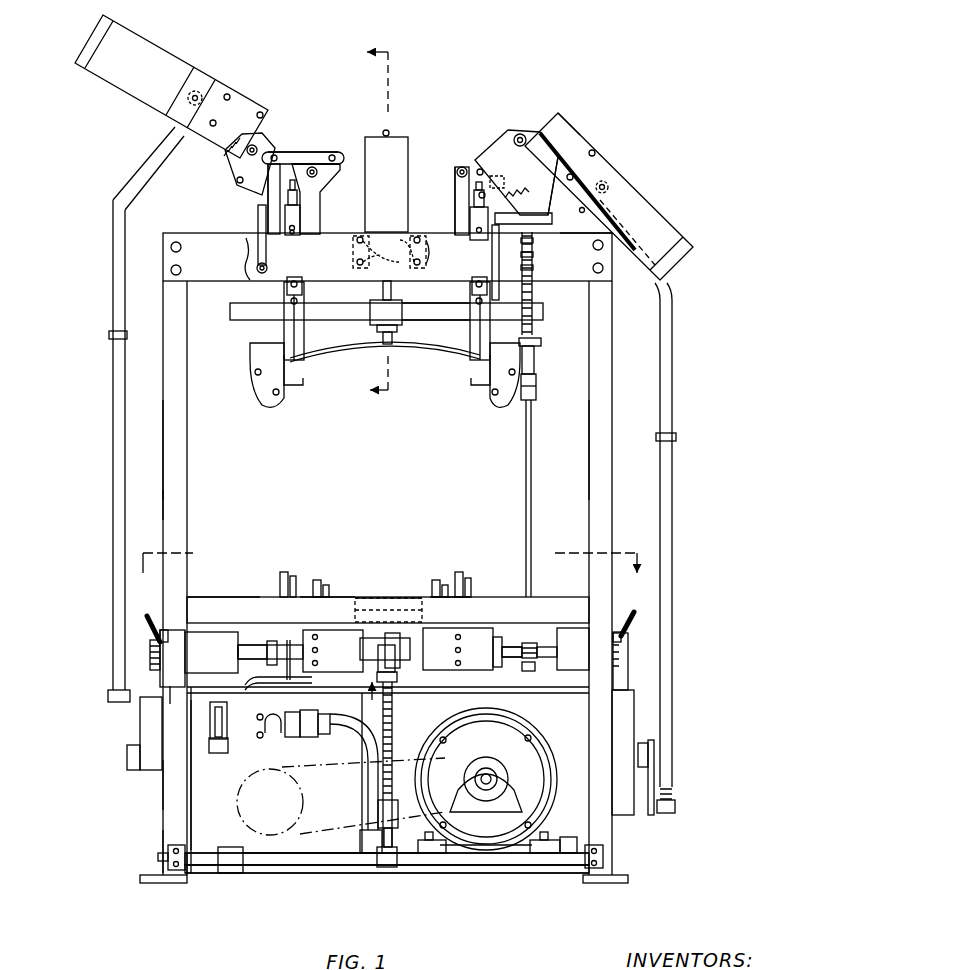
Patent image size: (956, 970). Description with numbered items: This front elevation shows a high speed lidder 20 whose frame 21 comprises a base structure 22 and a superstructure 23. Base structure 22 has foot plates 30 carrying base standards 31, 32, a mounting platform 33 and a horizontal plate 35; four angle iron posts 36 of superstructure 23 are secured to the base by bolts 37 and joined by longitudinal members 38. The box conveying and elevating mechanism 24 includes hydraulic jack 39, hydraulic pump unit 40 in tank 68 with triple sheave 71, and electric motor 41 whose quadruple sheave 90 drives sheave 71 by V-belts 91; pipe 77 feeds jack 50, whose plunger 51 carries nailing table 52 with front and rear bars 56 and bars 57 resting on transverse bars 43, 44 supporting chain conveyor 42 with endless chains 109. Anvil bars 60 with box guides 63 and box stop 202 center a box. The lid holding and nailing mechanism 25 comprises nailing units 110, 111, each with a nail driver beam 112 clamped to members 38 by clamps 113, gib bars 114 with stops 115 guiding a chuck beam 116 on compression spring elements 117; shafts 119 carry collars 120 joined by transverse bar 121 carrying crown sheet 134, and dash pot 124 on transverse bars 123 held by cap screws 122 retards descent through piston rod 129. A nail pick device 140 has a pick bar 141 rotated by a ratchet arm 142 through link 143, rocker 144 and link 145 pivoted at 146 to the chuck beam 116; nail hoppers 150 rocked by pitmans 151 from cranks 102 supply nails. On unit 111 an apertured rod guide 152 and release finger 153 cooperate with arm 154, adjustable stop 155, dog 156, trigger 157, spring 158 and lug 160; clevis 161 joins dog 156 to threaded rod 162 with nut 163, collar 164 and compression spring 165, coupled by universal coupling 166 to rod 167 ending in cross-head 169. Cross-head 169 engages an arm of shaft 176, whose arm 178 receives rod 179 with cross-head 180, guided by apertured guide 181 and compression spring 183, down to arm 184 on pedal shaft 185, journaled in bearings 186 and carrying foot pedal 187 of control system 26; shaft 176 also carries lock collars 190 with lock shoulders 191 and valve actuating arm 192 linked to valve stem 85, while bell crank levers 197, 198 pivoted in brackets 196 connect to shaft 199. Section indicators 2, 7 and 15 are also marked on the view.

The high speed lidder 20 is at (623, 72).
The frame 21 is at (156, 838).
The base structure 22 is at (158, 812).
The superstructure 23 is at (160, 492).
The box conveying and elevating mechanism 24 is at (313, 877).
The lid holding and nailing mechanism 25 is at (437, 158).
The control system 26 is at (398, 870).
The foot plates 30 is at (148, 885).
The base standard 31 is at (165, 785).
The base standard 32 is at (624, 723).
The mounting platform 33 is at (470, 868).
The horizontal plate 35 is at (485, 664).
The angle iron posts 36 is at (600, 412).
The bolts 37 is at (158, 678).
The longitudinal members 38 is at (245, 240).
The hydraulic jack 39 is at (372, 875).
The hydraulic pump unit 40 is at (220, 872).
The electric motor 41 is at (530, 858).
The chain conveyor 42 is at (436, 574).
The transverse bar 43 is at (305, 597).
The transverse bar 44 is at (462, 649).
The jack 50 is at (396, 708).
The plunger 51 is at (388, 608).
The nailing table 52 is at (270, 612).
The front and rear bars 56 is at (230, 607).
The connecting bars 57 is at (360, 605).
The anvil bar 60 is at (320, 580).
The box guides 63 is at (284, 574).
The rectangular tank 68 is at (257, 762).
The triple sheave 71 is at (236, 798).
The pipe 77 is at (332, 735).
The valve stem 85 is at (290, 712).
The quadruple sheave 90 is at (521, 735).
The V-belts 91 is at (346, 822).
The cranks 102 is at (136, 745).
The endless chains 109 is at (342, 582).
The nailing unit 110 is at (320, 150).
The nailing unit 111 is at (527, 125).
The nail driver beam 112 is at (302, 220).
The clamps 113 is at (297, 235).
The gib bar 114 is at (288, 330).
The stop 115 is at (302, 362).
The chuck beam 116 is at (301, 337).
The compression spring elements 117 is at (303, 297).
The shafts 119 is at (422, 310).
The collars 120 is at (403, 310).
The transverse bar 121 is at (396, 340).
The cap screws 122 is at (389, 252).
The transverse bars 123 is at (438, 254).
The dash pot 124 is at (371, 166).
The piston rod 129 is at (384, 298).
The crown sheet 134 is at (372, 347).
The nail pick device 140 is at (230, 163).
The pick bar 141 is at (320, 178).
The ratchet arm 142 is at (336, 155).
The link 143 is at (323, 140).
The rocker 144 is at (268, 160).
The link 145 is at (262, 218).
The pivot connection 146 is at (257, 268).
The nail hoppers 150 is at (148, 56).
The pitmans 151 is at (112, 392).
The apertured rod guide 152 is at (536, 340).
The release finger 153 is at (490, 246).
The arm 154 is at (560, 197).
The adjustable stop 155 is at (540, 223).
The dog 156 is at (582, 210).
The trigger 157 is at (503, 176).
The spring 158 is at (560, 172).
The lug 160 is at (455, 189).
The clevis 161 is at (534, 243).
The threaded rod 162 is at (534, 256).
The nut 163 is at (534, 268).
The collar 164 is at (536, 356).
The compression spring 165 is at (533, 297).
The universal coupling 166 is at (538, 384).
The rod 167 is at (525, 465).
The cross-head 169 is at (533, 672).
The shaft 176 is at (542, 645).
The arm 178 is at (398, 667).
The rod 179 is at (375, 796).
The cross-head 180 is at (397, 660).
The apertured guide 181 is at (392, 675).
The compression spring 183 is at (450, 740).
The arm 184 is at (386, 869).
The pedal shaft 185 is at (295, 876).
The bearings 186 is at (177, 875).
The foot pedal 187 is at (236, 880).
The lock collar 190 is at (245, 650).
The lock shoulder 191 is at (250, 656).
The valve actuating arm 192 is at (303, 648).
The brackets 196 is at (170, 640).
The bell crank lever 197 is at (150, 626).
The bell crank lever 198 is at (640, 626).
The shaft 199 is at (156, 660).
The box stop 202 is at (293, 572).
The section line 2 is at (389, 550).
The section line 7 is at (272, 703).
The section line 15 is at (397, 222).